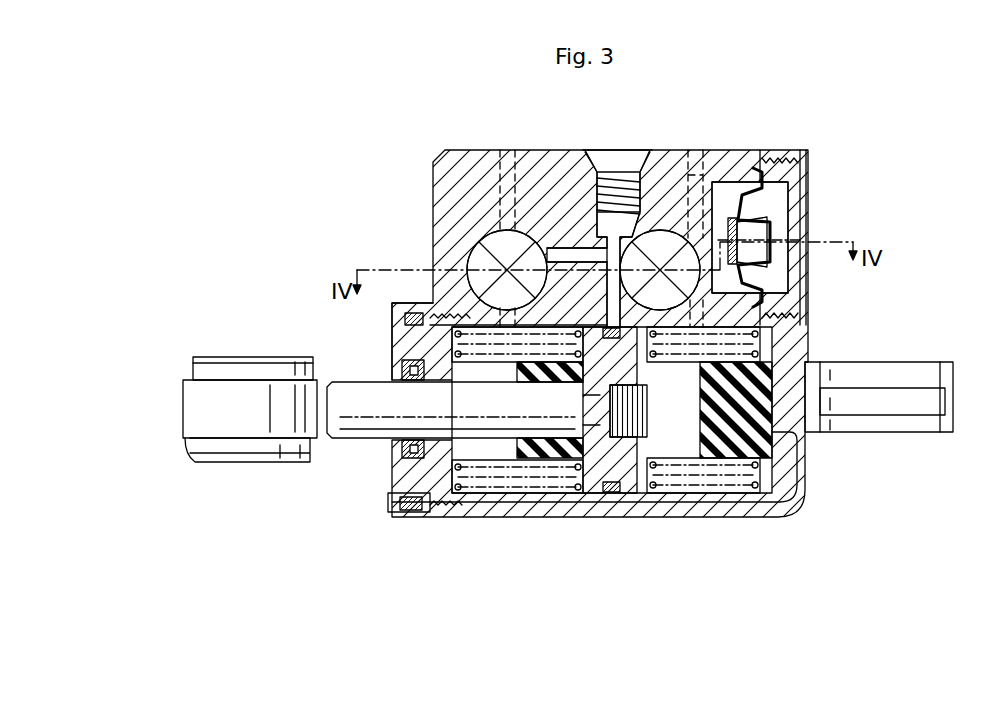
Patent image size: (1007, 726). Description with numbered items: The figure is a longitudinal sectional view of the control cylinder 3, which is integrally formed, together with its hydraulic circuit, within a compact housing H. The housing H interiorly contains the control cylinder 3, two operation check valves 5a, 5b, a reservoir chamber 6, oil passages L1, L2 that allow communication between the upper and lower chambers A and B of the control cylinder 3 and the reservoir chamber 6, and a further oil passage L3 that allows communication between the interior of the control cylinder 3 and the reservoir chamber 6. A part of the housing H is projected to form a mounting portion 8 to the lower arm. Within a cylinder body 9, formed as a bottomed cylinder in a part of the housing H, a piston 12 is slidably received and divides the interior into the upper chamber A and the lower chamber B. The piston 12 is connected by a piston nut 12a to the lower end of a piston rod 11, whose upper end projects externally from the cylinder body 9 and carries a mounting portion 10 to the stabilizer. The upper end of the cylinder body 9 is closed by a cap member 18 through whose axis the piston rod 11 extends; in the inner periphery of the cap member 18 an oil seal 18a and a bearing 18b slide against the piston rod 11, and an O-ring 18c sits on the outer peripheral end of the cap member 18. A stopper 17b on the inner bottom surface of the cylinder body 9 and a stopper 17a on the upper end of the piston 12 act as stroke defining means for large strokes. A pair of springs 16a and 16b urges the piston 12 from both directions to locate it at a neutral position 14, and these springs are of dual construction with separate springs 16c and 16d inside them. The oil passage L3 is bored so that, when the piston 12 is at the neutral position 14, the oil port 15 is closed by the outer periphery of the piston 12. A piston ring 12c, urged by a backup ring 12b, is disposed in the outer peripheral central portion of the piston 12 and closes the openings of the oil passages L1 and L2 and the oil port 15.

The control cylinder 3 is at (392, 495).
The operation check valve 5a is at (478, 253).
The operation check valve 5b is at (663, 245).
The reservoir chamber 6 is at (810, 199).
The mounting portion 8 is at (963, 415).
The cylinder body 9 is at (708, 508).
The mounting portion 10 is at (203, 447).
The piston rod 11 is at (360, 428).
The piston 12 is at (588, 490).
The piston nut 12a is at (644, 442).
The backup ring 12b is at (595, 420).
The piston ring 12c is at (615, 495).
The neutral position 14 is at (603, 516).
The oil port 15 is at (593, 302).
The spring 16a is at (573, 484).
The spring 16b is at (748, 473).
The spring 16c is at (445, 473).
The spring 16d is at (652, 468).
The stopper 17a is at (520, 372).
The stopper 17b is at (765, 453).
The cap member 18 is at (403, 332).
The oil seal 18a is at (400, 446).
The bearing 18b is at (403, 360).
The O-ring 18c is at (399, 512).
The upper chamber A is at (492, 450).
The lower chamber B is at (678, 398).
The housing H is at (785, 503).
The oil passage L1 is at (433, 303).
The oil passage L2 is at (703, 310).
The oil passage L3 is at (615, 306).